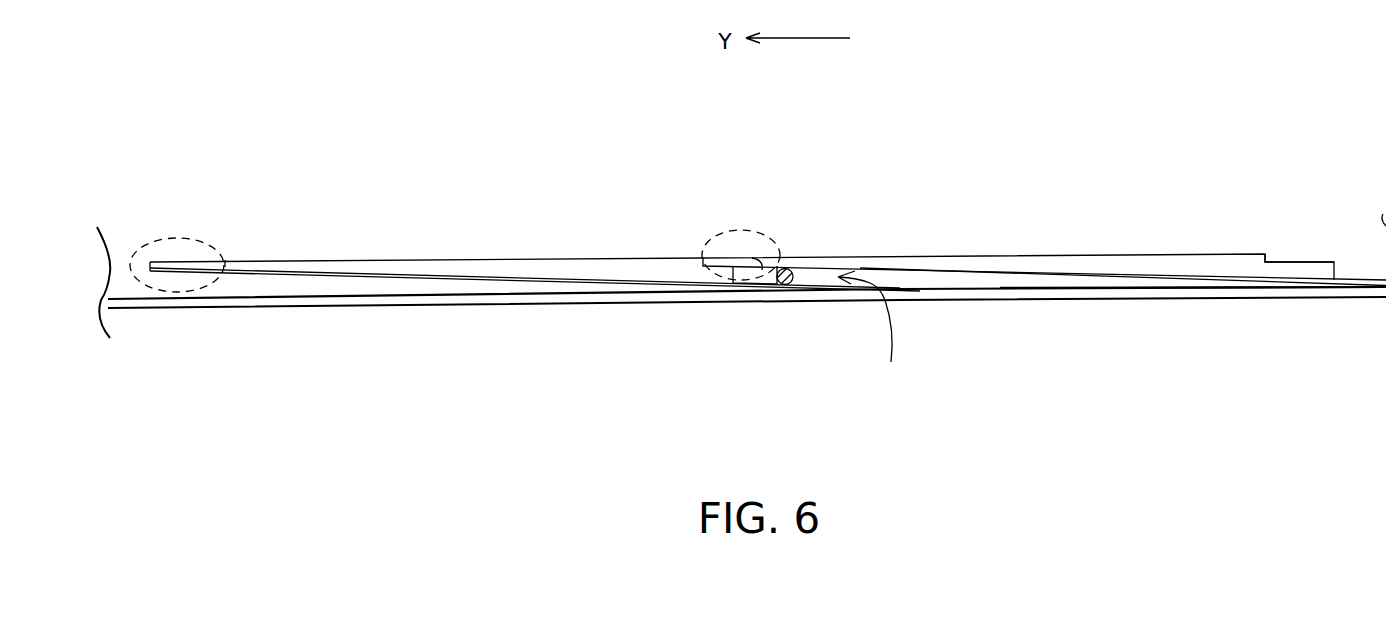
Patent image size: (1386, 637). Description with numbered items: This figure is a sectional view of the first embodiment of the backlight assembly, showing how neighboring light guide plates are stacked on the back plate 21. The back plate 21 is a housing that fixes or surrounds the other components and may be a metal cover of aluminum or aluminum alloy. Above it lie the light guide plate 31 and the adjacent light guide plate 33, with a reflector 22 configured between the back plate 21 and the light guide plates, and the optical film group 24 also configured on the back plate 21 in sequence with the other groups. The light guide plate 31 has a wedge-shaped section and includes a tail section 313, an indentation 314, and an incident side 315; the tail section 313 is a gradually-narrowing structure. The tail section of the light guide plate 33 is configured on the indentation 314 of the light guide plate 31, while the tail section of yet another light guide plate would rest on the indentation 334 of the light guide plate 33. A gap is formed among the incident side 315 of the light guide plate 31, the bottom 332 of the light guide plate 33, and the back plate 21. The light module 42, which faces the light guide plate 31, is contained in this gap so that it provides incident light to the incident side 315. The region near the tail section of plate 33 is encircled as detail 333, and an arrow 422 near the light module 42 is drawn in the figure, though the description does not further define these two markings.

The back plate 21 is at (303, 299).
The reflector 22 is at (518, 281).
The optical film group 24 is at (1073, 288).
The light guide plate 31 is at (565, 262).
The tail section 313 is at (188, 236).
The indentation 314 is at (733, 283).
The incident side 315 is at (752, 258).
The light guide plate 33 is at (1128, 257).
The bottom 332 is at (947, 268).
The engaging portion 333 is at (762, 238).
The indentation 334 is at (1303, 261).
The light module 42 is at (789, 285).
The pin movement direction 422 is at (876, 332).